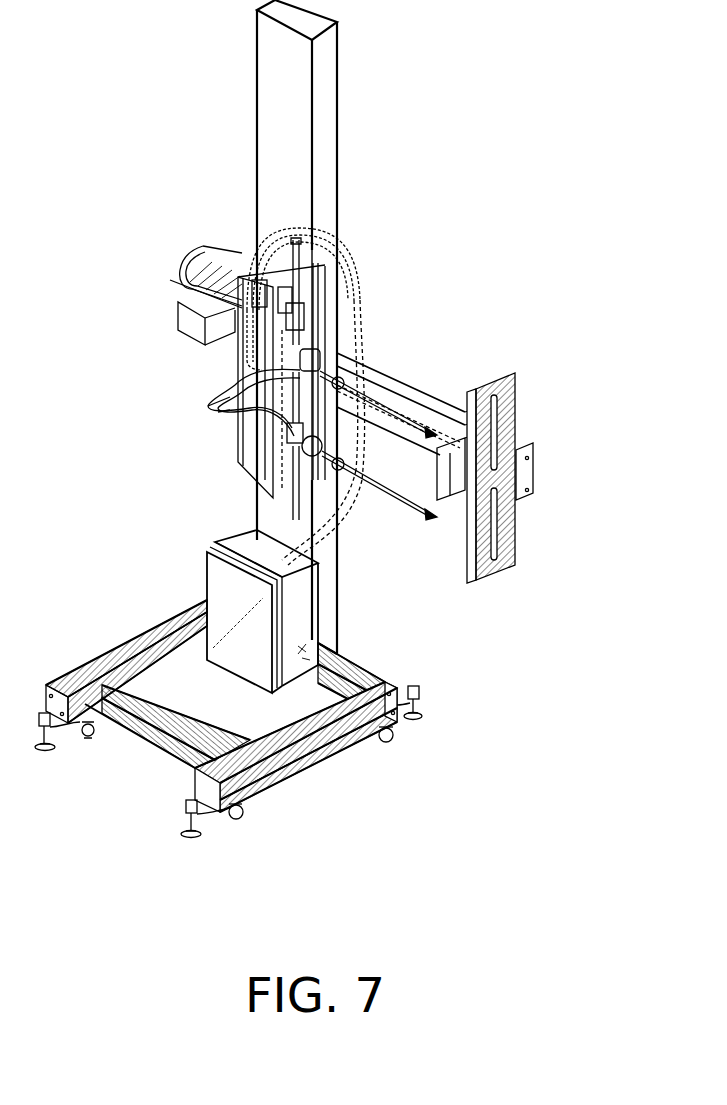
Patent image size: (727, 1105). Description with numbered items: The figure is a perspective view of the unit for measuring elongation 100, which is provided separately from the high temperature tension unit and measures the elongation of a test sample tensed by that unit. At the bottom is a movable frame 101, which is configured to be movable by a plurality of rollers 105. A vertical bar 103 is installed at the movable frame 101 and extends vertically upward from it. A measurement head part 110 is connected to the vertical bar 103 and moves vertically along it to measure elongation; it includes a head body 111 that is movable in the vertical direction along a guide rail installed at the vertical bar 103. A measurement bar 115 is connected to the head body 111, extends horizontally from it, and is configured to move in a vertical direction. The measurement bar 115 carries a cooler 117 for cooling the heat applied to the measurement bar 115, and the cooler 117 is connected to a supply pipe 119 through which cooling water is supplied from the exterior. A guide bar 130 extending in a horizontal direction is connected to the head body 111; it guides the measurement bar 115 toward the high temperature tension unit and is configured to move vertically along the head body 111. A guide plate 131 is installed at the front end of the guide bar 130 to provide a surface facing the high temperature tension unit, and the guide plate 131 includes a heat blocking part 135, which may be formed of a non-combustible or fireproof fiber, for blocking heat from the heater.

The unit for measuring elongation 100 is at (157, 88).
The movable frame 101 is at (280, 760).
The vertical bar 103 is at (278, 190).
The rollers 105 is at (186, 818).
The measurement head part 110 is at (372, 350).
The head body 111 is at (255, 448).
The measurement bar 115 is at (407, 420).
The cooler 117 is at (360, 470).
The supply pipe 119 is at (268, 396).
The guide bar 130 is at (438, 400).
The guide plate 131 is at (498, 376).
The heat blocking part 135 is at (533, 443).